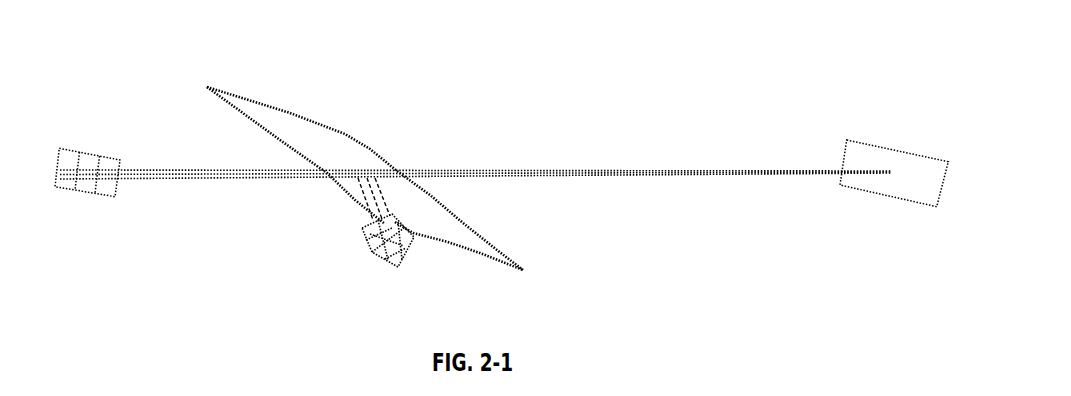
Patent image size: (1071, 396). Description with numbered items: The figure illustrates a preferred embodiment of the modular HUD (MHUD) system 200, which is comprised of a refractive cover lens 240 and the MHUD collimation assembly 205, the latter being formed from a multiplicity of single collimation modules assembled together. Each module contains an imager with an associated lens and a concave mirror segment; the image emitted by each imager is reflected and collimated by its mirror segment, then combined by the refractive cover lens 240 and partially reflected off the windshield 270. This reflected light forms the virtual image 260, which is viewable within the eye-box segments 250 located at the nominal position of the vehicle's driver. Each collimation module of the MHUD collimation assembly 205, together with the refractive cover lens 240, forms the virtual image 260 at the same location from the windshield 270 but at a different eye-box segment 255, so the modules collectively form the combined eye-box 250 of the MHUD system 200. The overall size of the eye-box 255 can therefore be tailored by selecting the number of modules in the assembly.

The modular HUD (MHUD) system 200 is at (68, 44).
The MHUD collimation assembly 205 is at (341, 256).
The refractive cover lens 240 is at (358, 232).
The eye-box segments 250 is at (95, 198).
The eye-box segment 255 is at (75, 135).
The virtual image 260 is at (867, 129).
The windshield 270 is at (249, 75).